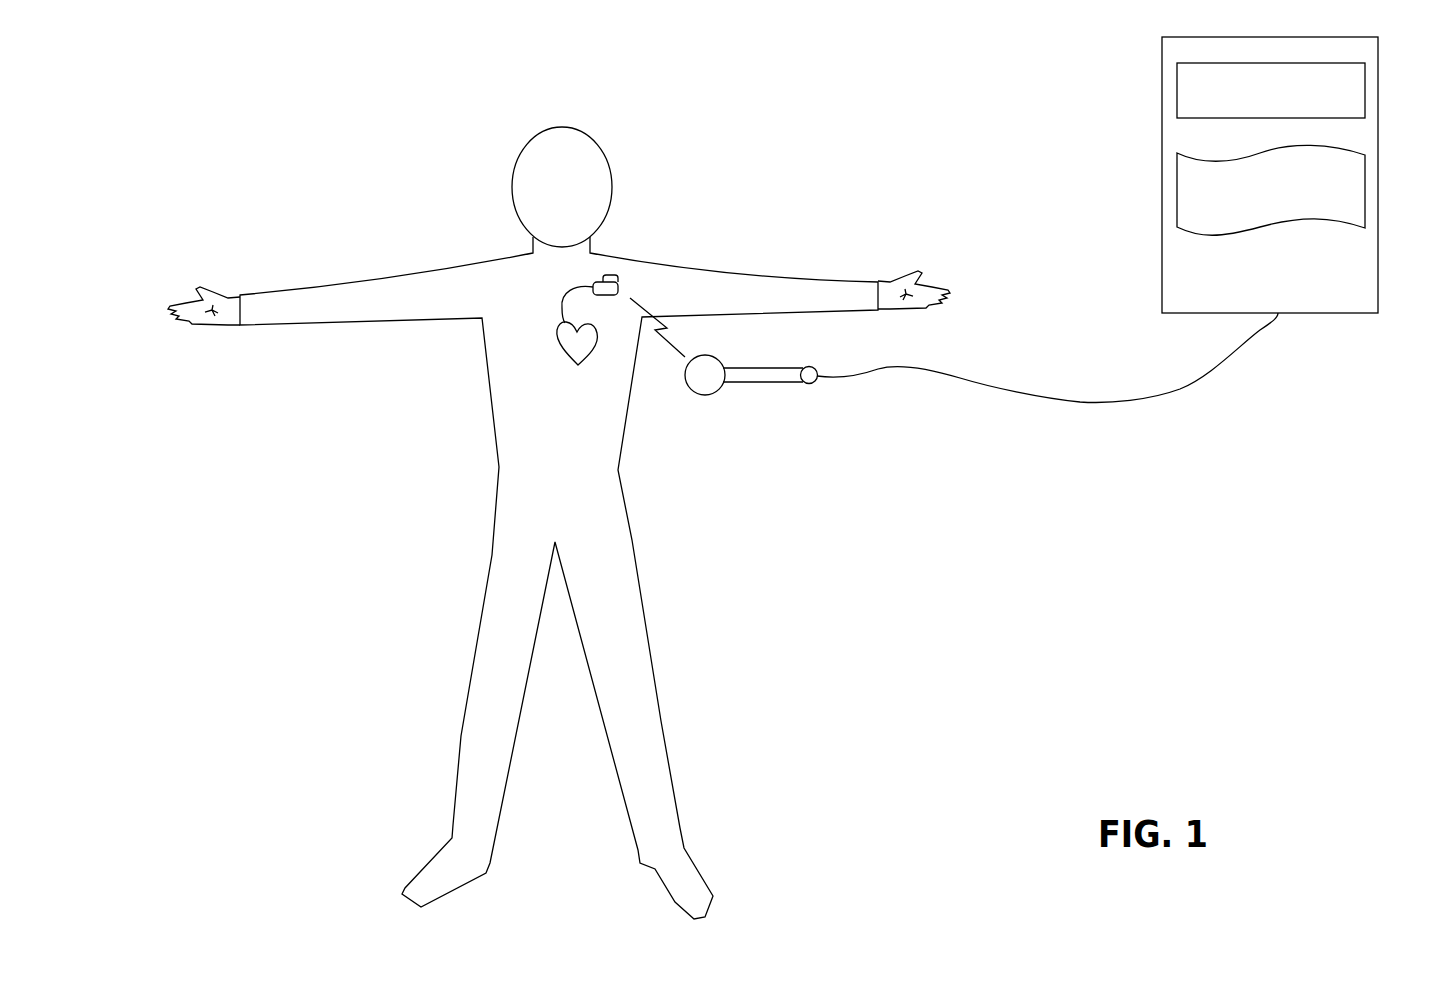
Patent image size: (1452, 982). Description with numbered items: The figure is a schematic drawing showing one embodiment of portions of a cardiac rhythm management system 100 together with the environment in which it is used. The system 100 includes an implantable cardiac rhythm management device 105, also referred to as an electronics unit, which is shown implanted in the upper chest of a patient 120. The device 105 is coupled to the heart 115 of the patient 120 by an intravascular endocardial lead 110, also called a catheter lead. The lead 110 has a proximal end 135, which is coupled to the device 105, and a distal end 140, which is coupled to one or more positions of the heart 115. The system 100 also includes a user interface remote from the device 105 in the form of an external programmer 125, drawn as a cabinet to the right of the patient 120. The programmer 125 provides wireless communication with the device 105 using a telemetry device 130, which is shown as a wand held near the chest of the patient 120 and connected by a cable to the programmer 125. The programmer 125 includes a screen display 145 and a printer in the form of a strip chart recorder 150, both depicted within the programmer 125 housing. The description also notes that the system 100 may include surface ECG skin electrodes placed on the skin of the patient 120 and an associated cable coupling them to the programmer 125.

The cardiac rhythm management system 100 is at (990, 592).
The implantable cardiac rhythm management device 105 is at (619, 287).
The intravascular endocardial lead 110 is at (562, 298).
The heart 115 is at (567, 360).
The patient 120 is at (498, 418).
The external programmer 125 is at (1382, 273).
The telemetry device 130 is at (706, 395).
The proximal end 135 is at (599, 278).
The distal end 140 is at (559, 318).
The screen display 145 is at (1366, 86).
The strip chart recorder 150 is at (1366, 188).